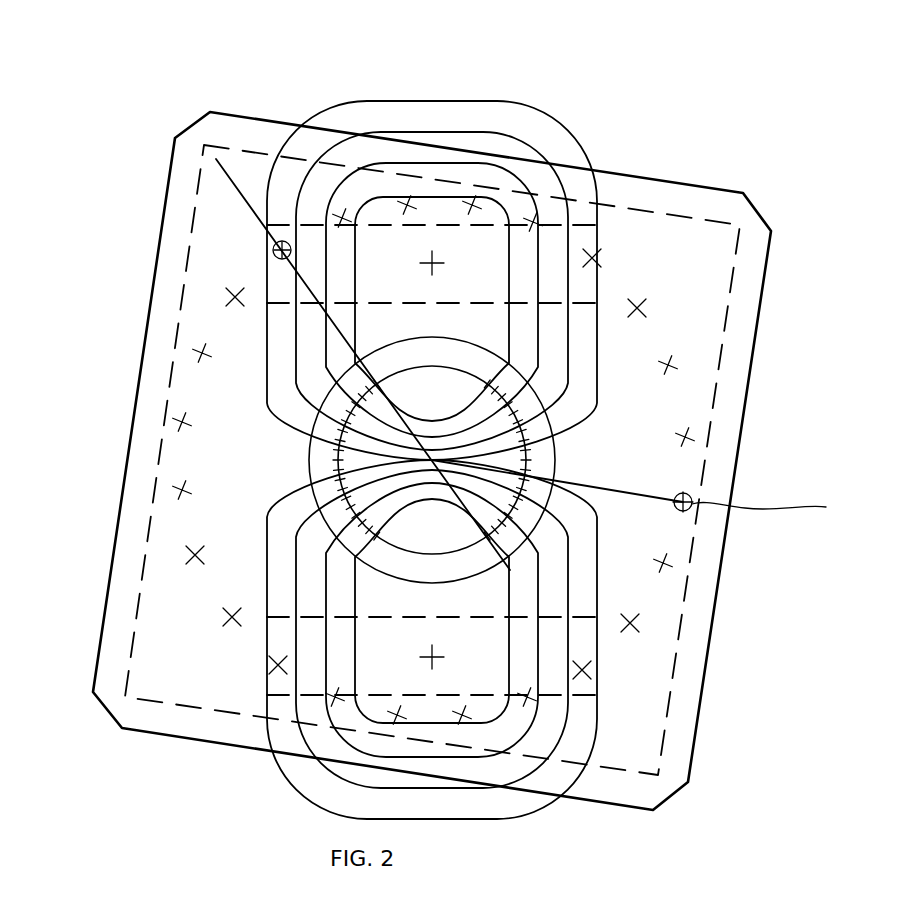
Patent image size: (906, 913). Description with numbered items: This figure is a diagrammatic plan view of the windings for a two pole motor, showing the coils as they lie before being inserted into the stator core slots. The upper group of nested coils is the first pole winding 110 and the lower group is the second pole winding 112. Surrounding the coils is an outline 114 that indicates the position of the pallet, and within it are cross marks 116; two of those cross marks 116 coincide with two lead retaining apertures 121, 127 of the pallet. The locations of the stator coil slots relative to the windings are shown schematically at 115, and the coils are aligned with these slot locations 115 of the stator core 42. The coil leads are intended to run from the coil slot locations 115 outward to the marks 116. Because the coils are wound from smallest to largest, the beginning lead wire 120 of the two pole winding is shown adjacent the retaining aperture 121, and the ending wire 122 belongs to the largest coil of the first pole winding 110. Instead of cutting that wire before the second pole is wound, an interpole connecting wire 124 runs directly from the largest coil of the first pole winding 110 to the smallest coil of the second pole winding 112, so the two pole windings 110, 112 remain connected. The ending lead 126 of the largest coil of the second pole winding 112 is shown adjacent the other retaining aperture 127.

The first pole winding 110 is at (560, 90).
The second pole winding 112 is at (263, 773).
The outline 114 is at (672, 198).
The stator coil slot locations 115 is at (326, 374).
The cross marks 116 is at (227, 300).
The beginning lead wire 120 is at (231, 180).
The lead retaining aperture 121 is at (272, 250).
The ending wire 122 is at (275, 436).
The interpole connecting wire 124 is at (340, 513).
The ending lead 126 is at (656, 492).
The lead retaining aperture 127 is at (700, 500).
The stator core 42 is at (467, 358).